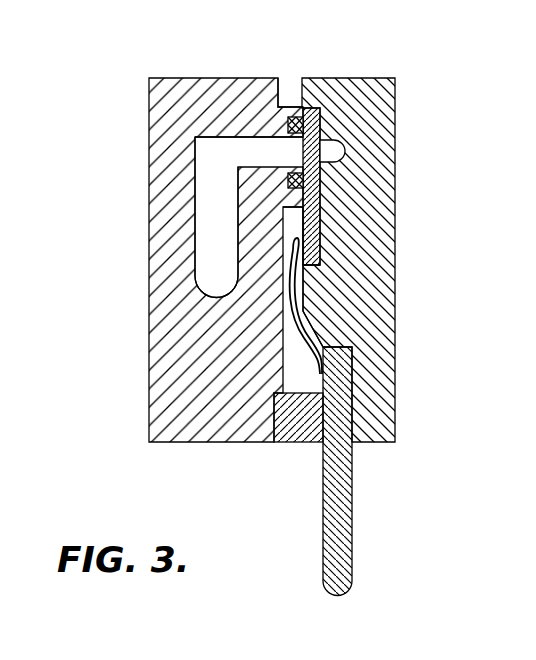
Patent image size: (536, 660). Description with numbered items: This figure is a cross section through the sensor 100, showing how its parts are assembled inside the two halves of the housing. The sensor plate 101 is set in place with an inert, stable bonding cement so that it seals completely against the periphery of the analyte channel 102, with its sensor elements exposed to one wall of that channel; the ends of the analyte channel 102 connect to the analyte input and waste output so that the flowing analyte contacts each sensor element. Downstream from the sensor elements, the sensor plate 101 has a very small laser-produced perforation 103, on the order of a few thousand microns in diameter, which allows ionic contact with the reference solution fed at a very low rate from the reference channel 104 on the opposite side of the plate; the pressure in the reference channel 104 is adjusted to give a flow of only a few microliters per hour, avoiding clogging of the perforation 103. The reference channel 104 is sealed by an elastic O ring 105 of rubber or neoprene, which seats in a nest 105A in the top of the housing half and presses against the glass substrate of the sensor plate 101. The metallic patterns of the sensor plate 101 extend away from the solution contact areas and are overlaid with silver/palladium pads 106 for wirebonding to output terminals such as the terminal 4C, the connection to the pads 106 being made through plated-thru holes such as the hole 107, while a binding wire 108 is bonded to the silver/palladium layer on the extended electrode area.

The sensor 100 is at (420, 35).
The sensor plate 101 is at (321, 204).
The analyte channel 102 is at (344, 146).
The perforation 103 is at (288, 133).
The reference channel 104 is at (207, 239).
The O ring 105 is at (289, 123).
The nest 105A is at (301, 116).
The silver/palladium pads 106 is at (300, 265).
The plated-thru hole 107 is at (305, 232).
The binding wire 108 is at (302, 343).
The output terminal 4C is at (353, 552).